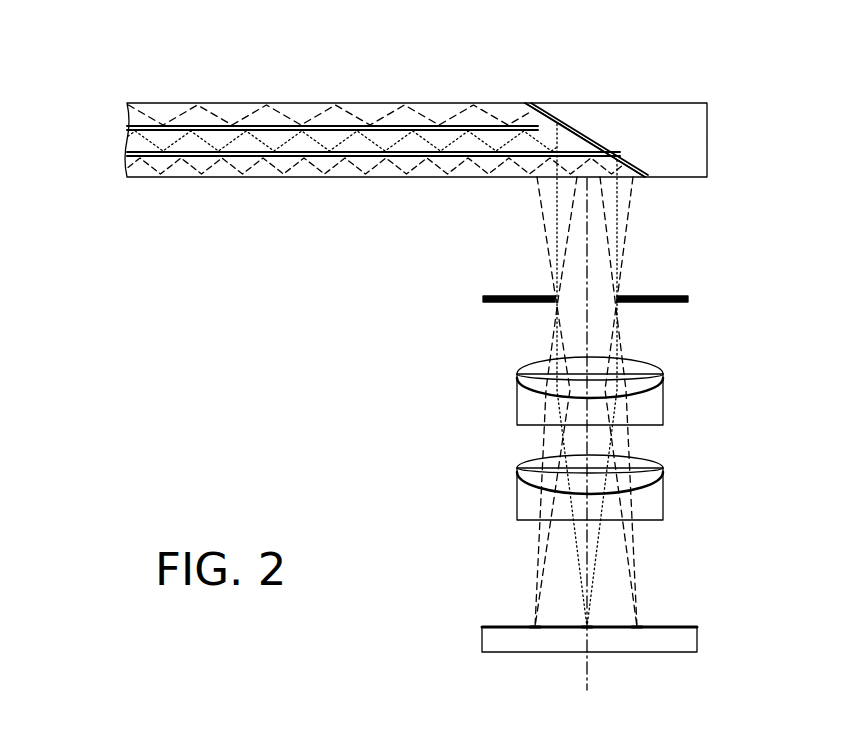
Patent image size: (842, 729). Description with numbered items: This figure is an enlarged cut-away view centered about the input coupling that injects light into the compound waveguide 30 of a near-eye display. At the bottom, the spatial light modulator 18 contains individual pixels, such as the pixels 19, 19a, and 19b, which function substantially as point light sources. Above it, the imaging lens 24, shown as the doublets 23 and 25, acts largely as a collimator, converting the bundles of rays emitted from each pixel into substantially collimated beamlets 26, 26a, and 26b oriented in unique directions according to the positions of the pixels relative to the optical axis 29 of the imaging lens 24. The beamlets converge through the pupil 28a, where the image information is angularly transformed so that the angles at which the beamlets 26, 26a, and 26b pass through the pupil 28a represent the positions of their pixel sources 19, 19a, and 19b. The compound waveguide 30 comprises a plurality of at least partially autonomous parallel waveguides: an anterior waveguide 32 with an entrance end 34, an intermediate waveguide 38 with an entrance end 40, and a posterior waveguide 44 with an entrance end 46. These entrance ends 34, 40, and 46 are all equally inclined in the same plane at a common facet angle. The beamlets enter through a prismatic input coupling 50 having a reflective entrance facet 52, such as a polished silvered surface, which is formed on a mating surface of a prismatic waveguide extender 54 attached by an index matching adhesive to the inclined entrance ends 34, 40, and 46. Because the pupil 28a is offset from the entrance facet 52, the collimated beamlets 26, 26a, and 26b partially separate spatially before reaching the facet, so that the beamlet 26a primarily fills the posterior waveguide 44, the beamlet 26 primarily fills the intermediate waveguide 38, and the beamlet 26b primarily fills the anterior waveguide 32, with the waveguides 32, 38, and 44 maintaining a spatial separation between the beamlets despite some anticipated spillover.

The spatial light modulator 18 is at (698, 637).
The pixel 19 is at (590, 627).
The pixel 19a is at (535, 627).
The pixel 19b is at (638, 627).
The doublet 23 is at (518, 485).
The imaging lens 24 is at (614, 439).
The doublet 25 is at (528, 395).
The beamlet 26 is at (625, 334).
The beamlet 26a is at (625, 230).
The beamlet 26b is at (537, 188).
The pupil 28a is at (556, 298).
The optical axis 29 is at (587, 663).
The compound waveguide 30 is at (401, 147).
The anterior waveguide 32 is at (304, 113).
The entrance end 34 is at (547, 105).
The intermediate waveguide 38 is at (132, 144).
The entrance end 40 is at (603, 142).
The posterior waveguide 44 is at (143, 165).
The entrance end 46 is at (622, 160).
The prismatic input coupling 50 is at (590, 129).
The reflective entrance facet 52 is at (553, 128).
The prismatic waveguide extender 54 is at (647, 113).